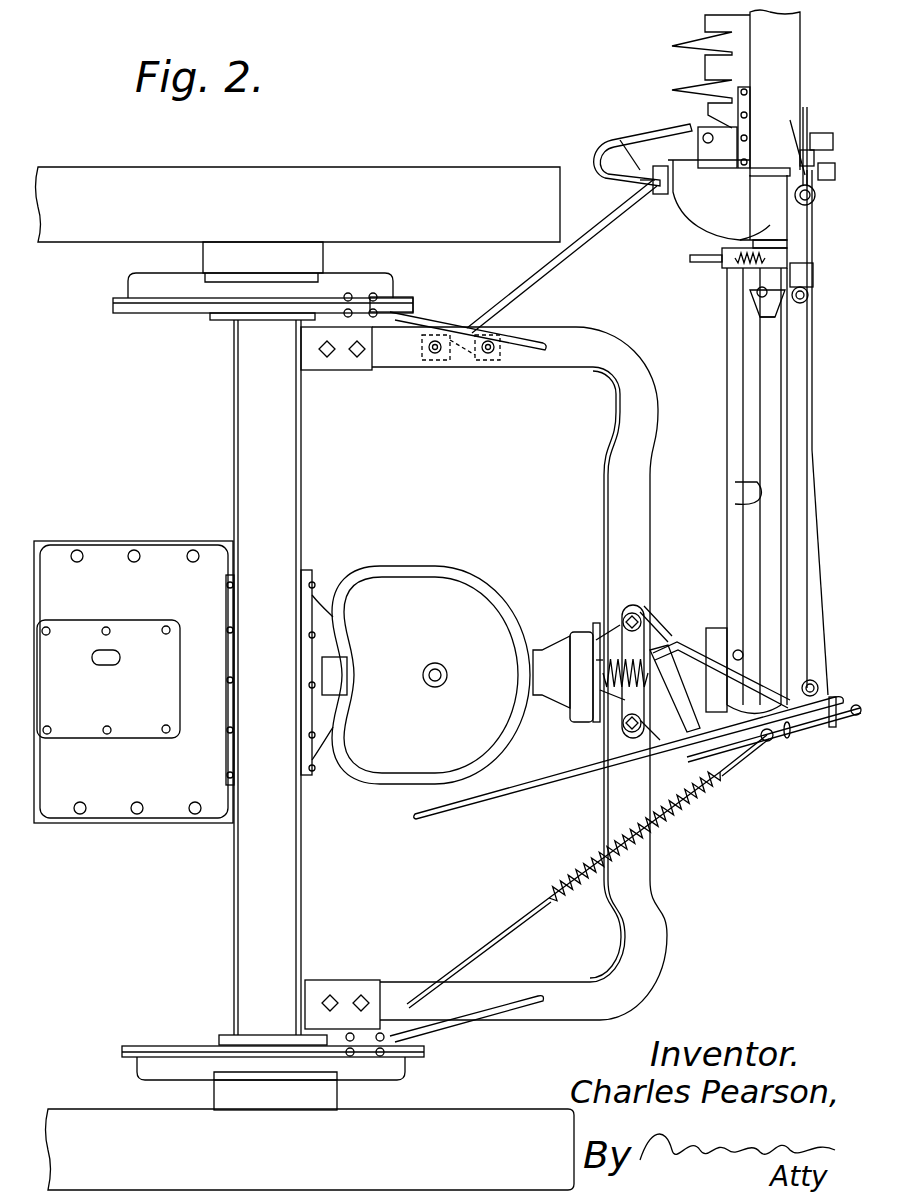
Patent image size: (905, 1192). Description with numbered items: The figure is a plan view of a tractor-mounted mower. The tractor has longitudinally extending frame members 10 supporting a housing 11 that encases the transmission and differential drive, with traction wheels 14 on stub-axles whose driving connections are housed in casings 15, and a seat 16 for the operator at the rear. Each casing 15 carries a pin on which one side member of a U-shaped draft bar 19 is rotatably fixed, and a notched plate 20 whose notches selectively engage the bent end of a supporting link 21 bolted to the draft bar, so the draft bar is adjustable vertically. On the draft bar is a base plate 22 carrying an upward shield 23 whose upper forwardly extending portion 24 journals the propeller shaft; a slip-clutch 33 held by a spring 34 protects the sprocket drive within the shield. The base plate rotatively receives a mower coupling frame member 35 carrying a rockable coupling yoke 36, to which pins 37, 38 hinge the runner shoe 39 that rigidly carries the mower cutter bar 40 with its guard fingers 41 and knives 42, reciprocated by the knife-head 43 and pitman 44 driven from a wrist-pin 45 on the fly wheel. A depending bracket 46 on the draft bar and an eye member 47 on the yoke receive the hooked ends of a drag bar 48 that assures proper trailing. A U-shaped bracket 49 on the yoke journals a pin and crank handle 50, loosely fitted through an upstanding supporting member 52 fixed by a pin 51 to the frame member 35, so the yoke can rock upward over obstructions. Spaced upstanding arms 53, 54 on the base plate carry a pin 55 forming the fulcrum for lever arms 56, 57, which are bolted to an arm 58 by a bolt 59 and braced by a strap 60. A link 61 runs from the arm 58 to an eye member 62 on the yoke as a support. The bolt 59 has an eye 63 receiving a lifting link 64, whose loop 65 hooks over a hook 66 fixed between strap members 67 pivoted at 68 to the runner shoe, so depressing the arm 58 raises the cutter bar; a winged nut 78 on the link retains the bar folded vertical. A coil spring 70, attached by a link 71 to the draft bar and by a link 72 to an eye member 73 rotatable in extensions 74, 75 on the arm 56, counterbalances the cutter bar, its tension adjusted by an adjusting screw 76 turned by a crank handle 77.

The frame members 10 is at (110, 541).
The housing 11 is at (172, 805).
The traction wheels 14 is at (415, 172).
The casings 15 is at (162, 312).
The seat 16 is at (412, 580).
The U-shaped draft bar 19 is at (668, 856).
The notched plate 20 is at (388, 300).
The supporting link 21 is at (435, 322).
The base plate 22 is at (615, 735).
The shield 23 is at (575, 700).
The forwardly extending portion 24 is at (537, 650).
The slip-clutch 33 is at (628, 700).
The spring 34 is at (600, 640).
The mower coupling frame member 35 is at (752, 410).
The coupling yoke 36 is at (745, 212).
The pin 37 is at (640, 180).
The pin 38 is at (812, 160).
The runner shoe 39 is at (600, 160).
The mower cutter bar 40 is at (800, 18).
The guard fingers 41 is at (690, 45).
The knives 42 is at (708, 100).
The knife-head 43 is at (737, 108).
The pitman 44 is at (735, 482).
The wrist-pin 45 is at (738, 648).
The depending bracket 46 is at (482, 356).
The eye member 47 is at (618, 140).
The drag bar 48 is at (568, 265).
The U-shaped bracket 49 is at (735, 268).
The pin and crank handle 50 is at (700, 262).
The pin 51 is at (758, 302).
The upstanding supporting member 52 is at (752, 294).
The upstanding arm 53 is at (640, 745).
The upstanding arm 54 is at (660, 615).
The pin 55 is at (598, 760).
The arm 56 is at (694, 745).
The arm 57 is at (680, 610).
The arm 58 is at (510, 788).
The bolt 59 is at (800, 722).
The strap 60 is at (790, 698).
The link 61 is at (823, 540).
The eye member 62 is at (810, 296).
The eye 63 is at (814, 684).
The lifting link 64 is at (813, 432).
The loop 65 is at (755, 200).
The hook 66 is at (760, 178).
The strap members 67 is at (806, 107).
The pivot 68 is at (808, 148).
The coil spring 70 is at (578, 858).
The link 71 is at (492, 932).
The link 72 is at (738, 776).
The eye member 73 is at (768, 745).
The extension 74 is at (787, 740).
The extension 75 is at (834, 728).
The adjusting screw 76 is at (700, 805).
The crank handle 77 is at (840, 720).
The winged nut 78 is at (798, 140).